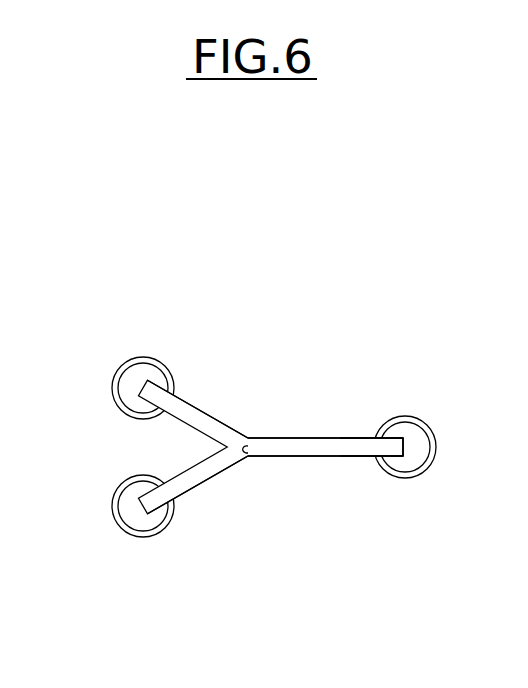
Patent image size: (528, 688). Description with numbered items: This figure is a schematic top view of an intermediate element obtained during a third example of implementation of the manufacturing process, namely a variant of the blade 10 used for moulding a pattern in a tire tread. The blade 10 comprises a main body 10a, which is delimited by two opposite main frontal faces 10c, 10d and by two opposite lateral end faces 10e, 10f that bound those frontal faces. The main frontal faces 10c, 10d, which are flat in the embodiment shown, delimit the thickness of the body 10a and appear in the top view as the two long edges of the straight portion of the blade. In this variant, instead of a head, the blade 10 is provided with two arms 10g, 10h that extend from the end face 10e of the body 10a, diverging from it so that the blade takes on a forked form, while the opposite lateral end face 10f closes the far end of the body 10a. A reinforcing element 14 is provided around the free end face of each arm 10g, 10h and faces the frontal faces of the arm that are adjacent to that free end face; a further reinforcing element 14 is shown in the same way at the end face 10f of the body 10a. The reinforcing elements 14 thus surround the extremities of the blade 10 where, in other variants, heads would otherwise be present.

The reinforcing element 14 is at (152, 350).
The blade 10 is at (267, 428).
The main body 10a is at (358, 428).
The main frontal face 10c is at (306, 457).
The main frontal face 10d is at (312, 437).
The lateral end face 10e is at (247, 451).
The lateral end face 10f is at (404, 448).
The arm 10g is at (208, 478).
The arm 10h is at (208, 418).